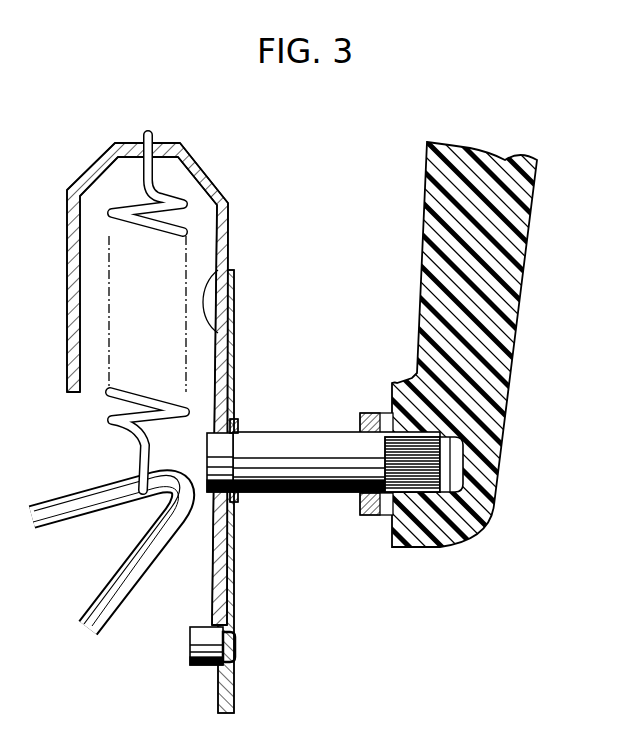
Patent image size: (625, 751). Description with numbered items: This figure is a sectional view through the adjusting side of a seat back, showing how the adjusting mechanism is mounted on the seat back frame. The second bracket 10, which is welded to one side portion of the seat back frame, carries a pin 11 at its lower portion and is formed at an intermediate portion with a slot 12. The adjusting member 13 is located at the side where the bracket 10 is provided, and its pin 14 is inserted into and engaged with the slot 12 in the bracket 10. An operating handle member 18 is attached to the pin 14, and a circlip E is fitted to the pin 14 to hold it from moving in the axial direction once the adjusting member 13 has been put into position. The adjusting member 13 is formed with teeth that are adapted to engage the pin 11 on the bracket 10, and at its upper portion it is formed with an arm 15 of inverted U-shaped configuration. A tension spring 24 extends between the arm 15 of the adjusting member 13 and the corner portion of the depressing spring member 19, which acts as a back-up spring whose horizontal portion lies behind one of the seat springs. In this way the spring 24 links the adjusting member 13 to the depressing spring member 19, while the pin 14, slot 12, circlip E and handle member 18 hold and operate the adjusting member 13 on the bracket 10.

The second bracket 10 is at (232, 307).
The pin 11 is at (197, 645).
The slot 12 is at (232, 413).
The adjusting member 13 is at (222, 268).
The pin 14 is at (305, 495).
The arm 15 is at (187, 150).
The operating handle member 18 is at (500, 263).
The depressing spring member 19 is at (60, 500).
The tension spring 24 is at (112, 212).
The circlip E is at (233, 503).